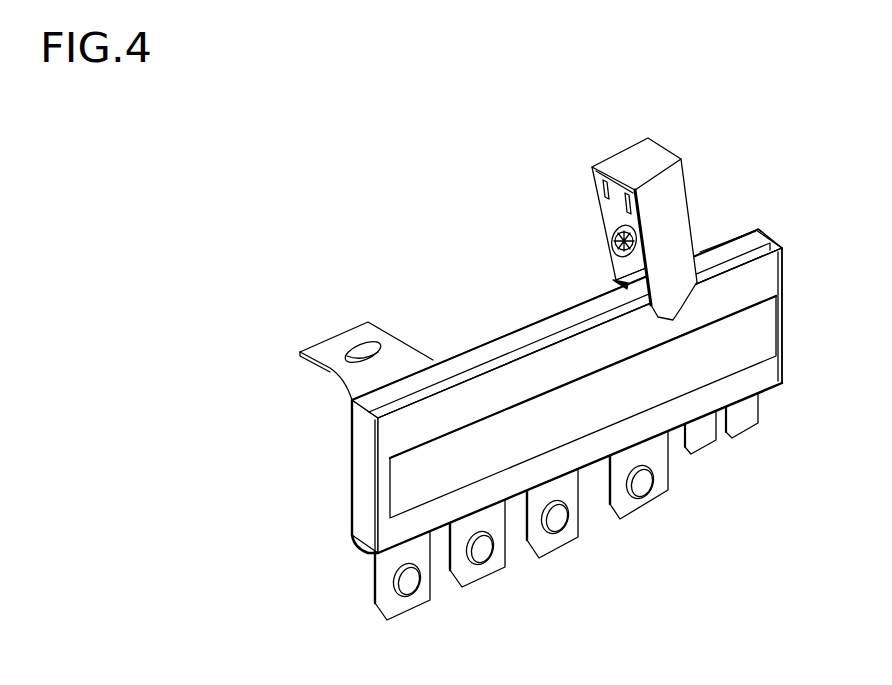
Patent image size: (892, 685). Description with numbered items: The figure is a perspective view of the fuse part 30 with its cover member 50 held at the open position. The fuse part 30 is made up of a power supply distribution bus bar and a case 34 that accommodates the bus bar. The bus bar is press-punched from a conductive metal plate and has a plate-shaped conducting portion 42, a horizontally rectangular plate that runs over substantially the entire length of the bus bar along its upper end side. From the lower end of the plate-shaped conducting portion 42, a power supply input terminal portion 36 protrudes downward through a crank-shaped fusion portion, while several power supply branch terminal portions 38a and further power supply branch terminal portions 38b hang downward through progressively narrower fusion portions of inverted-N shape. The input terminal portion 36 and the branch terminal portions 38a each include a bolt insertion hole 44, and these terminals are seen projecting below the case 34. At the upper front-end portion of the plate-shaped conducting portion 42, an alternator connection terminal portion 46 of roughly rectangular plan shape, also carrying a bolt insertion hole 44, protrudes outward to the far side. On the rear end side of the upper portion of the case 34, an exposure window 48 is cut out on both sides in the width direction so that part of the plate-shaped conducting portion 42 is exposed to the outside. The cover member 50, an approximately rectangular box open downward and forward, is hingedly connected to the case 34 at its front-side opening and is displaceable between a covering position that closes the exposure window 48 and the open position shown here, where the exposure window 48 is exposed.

The fuse part 30 is at (541, 195).
The case 34 is at (590, 355).
The power supply input terminal portion 36 is at (635, 507).
The power supply branch terminal portions 38a is at (398, 605).
The power supply branch terminal portions 38b is at (703, 438).
The plate-shaped conducting portion 42 is at (736, 287).
The bolt insertion hole 44 is at (362, 352).
The alternator connection terminal portion 46 is at (330, 348).
The exposure window 48 is at (706, 248).
The cover member 50 is at (630, 272).